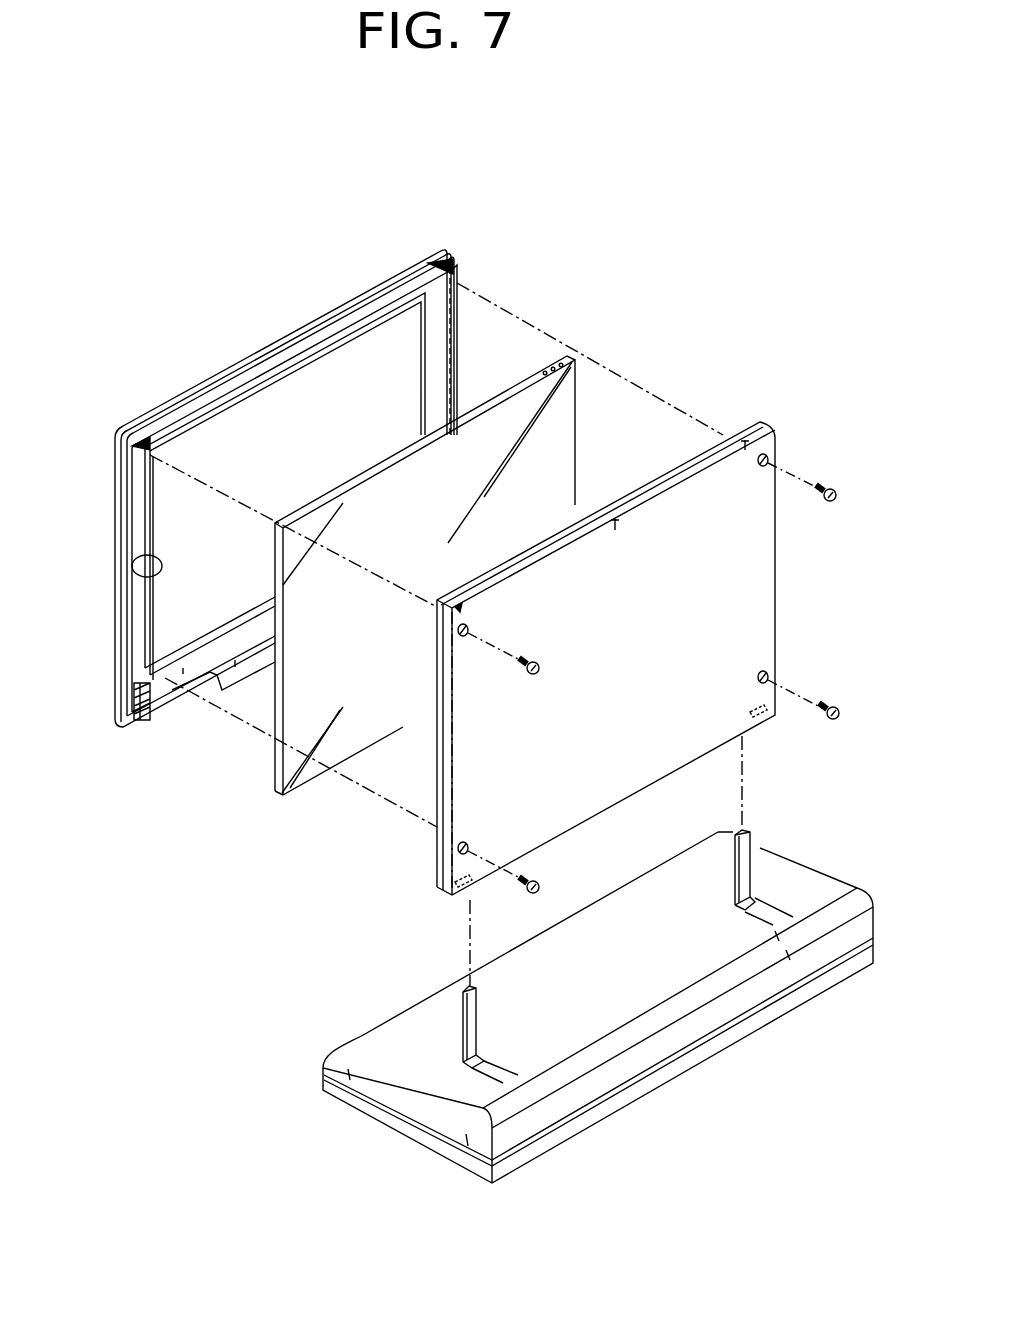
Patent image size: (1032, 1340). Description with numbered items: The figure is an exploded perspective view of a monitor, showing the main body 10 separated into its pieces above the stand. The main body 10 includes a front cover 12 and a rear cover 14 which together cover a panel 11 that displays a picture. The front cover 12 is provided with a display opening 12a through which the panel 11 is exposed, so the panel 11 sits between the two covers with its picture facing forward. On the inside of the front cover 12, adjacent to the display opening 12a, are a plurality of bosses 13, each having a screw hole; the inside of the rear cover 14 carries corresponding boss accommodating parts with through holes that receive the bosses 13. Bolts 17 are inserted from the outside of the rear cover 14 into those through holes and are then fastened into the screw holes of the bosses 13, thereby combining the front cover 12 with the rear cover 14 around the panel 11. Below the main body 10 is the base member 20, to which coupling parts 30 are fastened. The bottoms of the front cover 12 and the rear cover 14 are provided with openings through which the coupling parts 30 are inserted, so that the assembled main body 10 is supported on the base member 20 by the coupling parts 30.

The main body 10 is at (763, 345).
The panel 11 is at (563, 408).
The front cover 12 is at (458, 313).
The display opening 12a is at (132, 563).
The bosses 13 is at (458, 273).
The rear cover 14 is at (703, 455).
The bolts 17 is at (540, 667).
The base member 20 is at (398, 1126).
The coupling parts 30 is at (483, 1018).